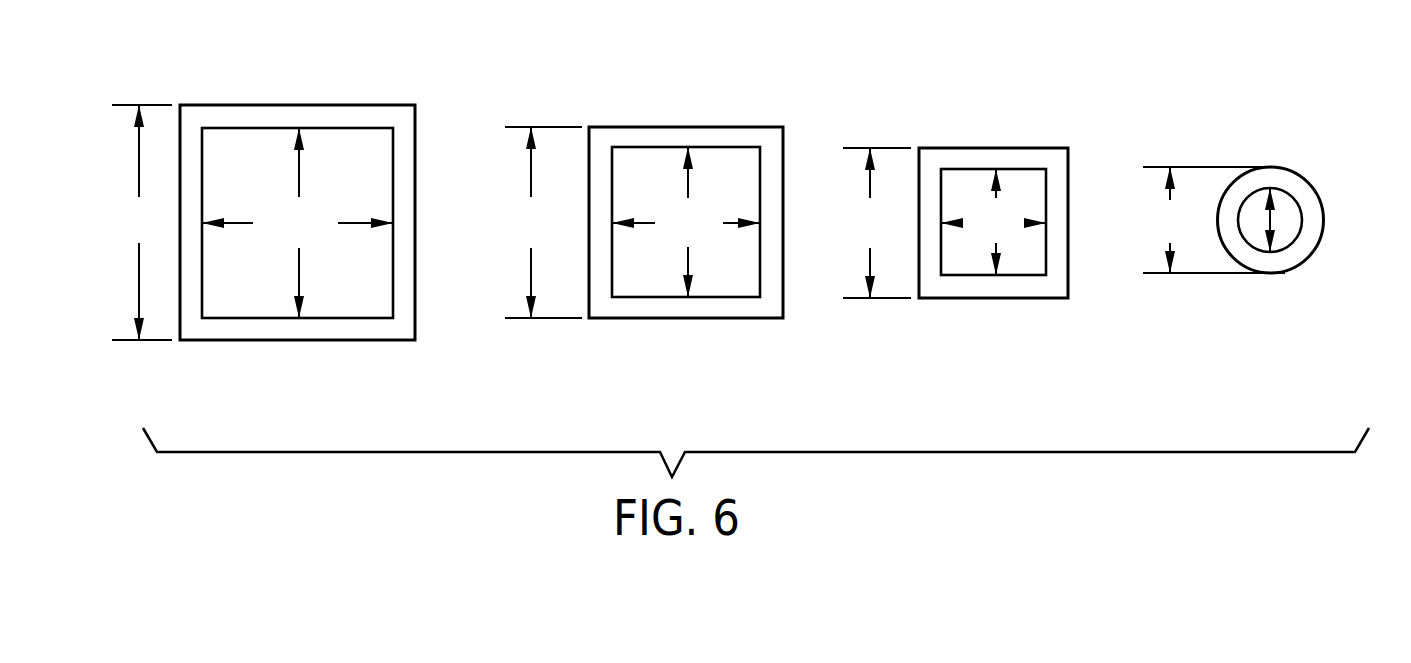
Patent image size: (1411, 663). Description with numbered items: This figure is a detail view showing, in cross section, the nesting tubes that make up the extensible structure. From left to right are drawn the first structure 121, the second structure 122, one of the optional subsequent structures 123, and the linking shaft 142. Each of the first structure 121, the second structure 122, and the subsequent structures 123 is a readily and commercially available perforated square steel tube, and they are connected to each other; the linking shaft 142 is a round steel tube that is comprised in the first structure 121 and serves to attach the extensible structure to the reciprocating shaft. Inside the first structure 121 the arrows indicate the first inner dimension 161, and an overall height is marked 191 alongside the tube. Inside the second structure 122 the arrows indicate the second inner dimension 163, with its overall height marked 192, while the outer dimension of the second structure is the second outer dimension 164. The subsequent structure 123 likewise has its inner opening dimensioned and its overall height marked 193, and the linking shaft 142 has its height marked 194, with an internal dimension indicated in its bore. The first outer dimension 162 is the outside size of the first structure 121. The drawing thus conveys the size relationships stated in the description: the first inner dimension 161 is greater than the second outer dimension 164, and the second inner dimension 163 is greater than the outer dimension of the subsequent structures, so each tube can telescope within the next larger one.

The first structure 121 is at (327, 105).
The second structure 122 is at (695, 127).
The subsequent structure 123 is at (980, 148).
The linking shaft 142 is at (1308, 251).
The first inner dimension 161 is at (297, 223).
The first outer dimension 162 is at (686, 222).
The second inner dimension 163 is at (993, 222).
The second outer dimension 164 is at (1275, 222).
The outer dimension of first square ring member 191 is at (138, 222).
The outer dimension of second square ring member 192 is at (542, 222).
The outer dimension of third square ring member 193 is at (877, 223).
The outer dimension of circular ring member 194 is at (1213, 220).